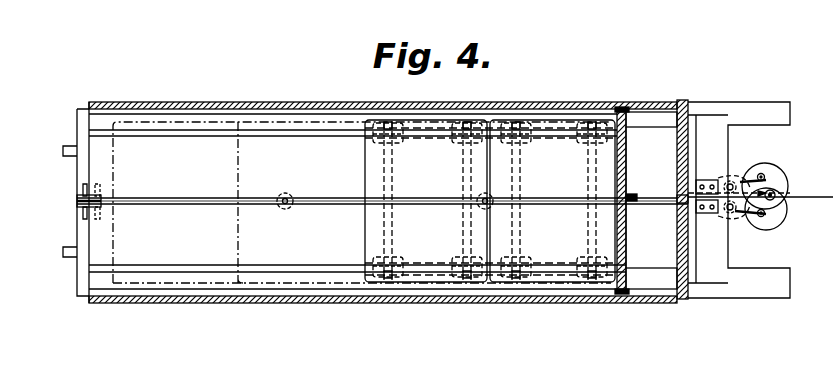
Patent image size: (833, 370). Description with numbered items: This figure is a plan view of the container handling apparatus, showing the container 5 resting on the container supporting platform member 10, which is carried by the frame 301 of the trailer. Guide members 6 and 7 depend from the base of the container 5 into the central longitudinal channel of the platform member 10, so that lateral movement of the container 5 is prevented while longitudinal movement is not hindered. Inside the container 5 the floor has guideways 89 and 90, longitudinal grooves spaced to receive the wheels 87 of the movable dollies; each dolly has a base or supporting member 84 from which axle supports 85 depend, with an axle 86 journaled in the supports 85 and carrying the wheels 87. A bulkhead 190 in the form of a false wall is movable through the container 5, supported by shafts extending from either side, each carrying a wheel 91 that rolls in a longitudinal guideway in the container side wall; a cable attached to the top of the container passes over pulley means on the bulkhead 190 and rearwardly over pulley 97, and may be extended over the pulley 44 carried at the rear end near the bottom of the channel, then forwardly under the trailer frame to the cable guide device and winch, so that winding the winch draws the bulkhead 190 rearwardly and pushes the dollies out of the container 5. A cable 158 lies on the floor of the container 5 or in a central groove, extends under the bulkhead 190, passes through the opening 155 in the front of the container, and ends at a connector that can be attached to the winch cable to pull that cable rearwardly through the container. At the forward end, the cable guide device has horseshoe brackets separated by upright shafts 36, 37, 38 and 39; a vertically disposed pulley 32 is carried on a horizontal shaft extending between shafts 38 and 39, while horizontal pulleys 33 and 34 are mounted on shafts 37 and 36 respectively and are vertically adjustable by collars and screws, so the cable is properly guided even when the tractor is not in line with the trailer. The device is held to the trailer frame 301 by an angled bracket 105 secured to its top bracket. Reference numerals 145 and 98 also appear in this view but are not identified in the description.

The container supporting platform member 10 is at (78, 297).
The mounting lugs 145 is at (63, 151).
The guideway 89 is at (89, 132).
The guideway 90 is at (92, 269).
The cable 158 is at (163, 201).
The pulley 97 is at (99, 197).
The pulley 44 is at (80, 203).
The base or supporting member 84 is at (420, 126).
The axle supports 85 is at (387, 144).
The axle 86 is at (391, 168).
The wheels 87 is at (378, 138).
The guide member 6 is at (291, 208).
The guide member 7 is at (483, 208).
The bulkhead 190 is at (624, 151).
The wheel 91 is at (630, 112).
The shaft nut 98 is at (634, 195).
The opening 155 is at (681, 204).
The container 5 is at (684, 100).
The trailer frame 301 is at (742, 103).
The pulley 32 is at (745, 180).
The upright shaft 39 is at (740, 185).
The angled bracket 105 is at (726, 194).
The upright shaft 38 is at (732, 214).
The pulley 33 is at (768, 166).
The pulley 34 is at (778, 222).
The upright shaft 37 is at (760, 173).
The upright shaft 36 is at (761, 217).